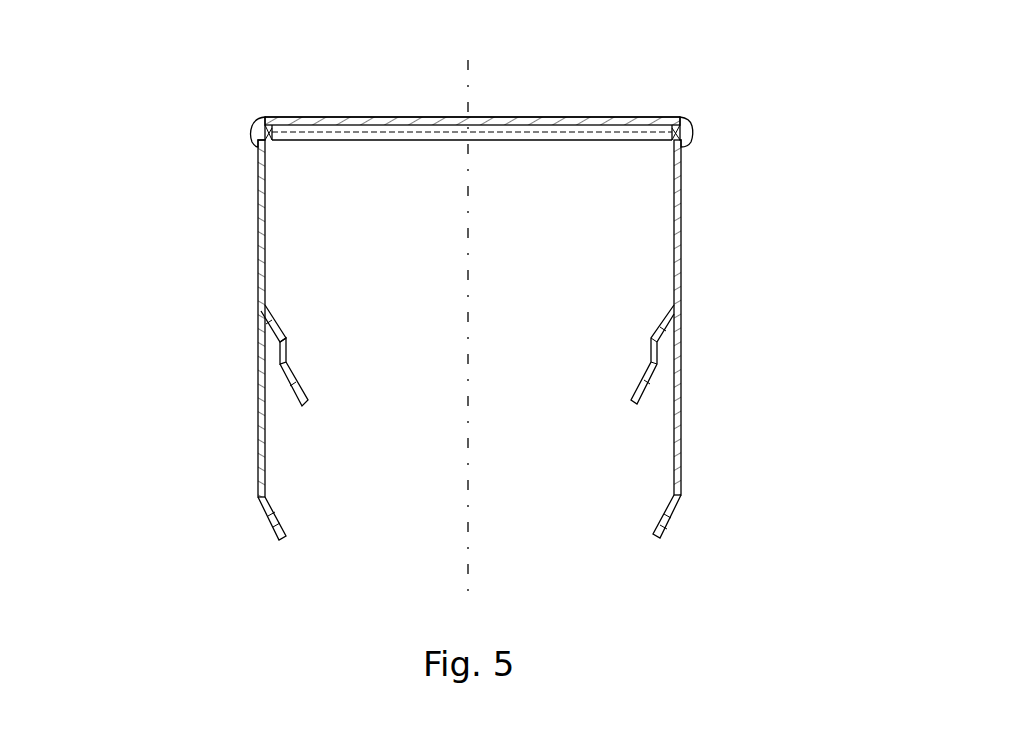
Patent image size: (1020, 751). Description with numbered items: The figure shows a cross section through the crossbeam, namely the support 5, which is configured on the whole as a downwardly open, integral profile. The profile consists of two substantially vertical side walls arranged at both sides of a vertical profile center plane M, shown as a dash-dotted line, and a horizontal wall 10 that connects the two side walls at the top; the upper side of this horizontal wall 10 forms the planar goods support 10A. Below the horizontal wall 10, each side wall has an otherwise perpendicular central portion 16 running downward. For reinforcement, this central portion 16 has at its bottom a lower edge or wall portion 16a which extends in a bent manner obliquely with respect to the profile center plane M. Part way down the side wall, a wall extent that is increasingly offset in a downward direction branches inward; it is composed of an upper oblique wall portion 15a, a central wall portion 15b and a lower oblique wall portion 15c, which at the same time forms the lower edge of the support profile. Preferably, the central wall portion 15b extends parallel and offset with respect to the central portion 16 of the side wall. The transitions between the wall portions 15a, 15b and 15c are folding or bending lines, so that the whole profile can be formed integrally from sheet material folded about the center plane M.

The support 5 is at (553, 248).
The horizontal wall 10 is at (346, 117).
The planar goods support 10A is at (510, 117).
The upper oblique wall portion 15a is at (270, 330).
The central wall portion 15b is at (287, 350).
The lower oblique wall portion 15c is at (290, 392).
The central portion of the side wall 16 is at (683, 368).
The lower edge wall portion 16a is at (279, 522).
The vertical profile center plane M is at (470, 548).